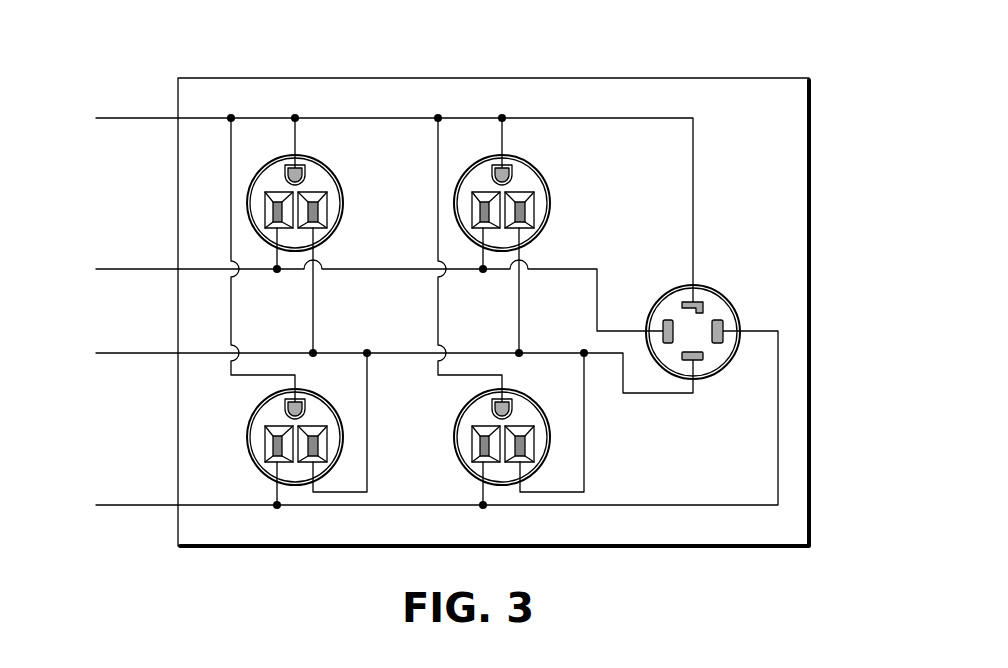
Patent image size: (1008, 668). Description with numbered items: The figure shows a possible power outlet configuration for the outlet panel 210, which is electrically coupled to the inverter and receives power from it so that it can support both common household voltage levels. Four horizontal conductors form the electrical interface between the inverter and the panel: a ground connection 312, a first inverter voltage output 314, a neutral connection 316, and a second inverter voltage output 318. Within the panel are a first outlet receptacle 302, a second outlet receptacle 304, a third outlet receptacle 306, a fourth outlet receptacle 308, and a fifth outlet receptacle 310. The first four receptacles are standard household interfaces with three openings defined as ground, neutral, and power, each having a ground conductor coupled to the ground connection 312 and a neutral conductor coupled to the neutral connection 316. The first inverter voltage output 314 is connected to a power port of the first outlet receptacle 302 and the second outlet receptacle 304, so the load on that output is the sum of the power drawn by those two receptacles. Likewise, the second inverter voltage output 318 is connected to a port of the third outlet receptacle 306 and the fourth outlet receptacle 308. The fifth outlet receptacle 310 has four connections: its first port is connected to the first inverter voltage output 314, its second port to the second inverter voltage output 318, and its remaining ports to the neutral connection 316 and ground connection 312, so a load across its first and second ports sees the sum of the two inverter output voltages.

The outlet panel 210 is at (728, 78).
The first outlet receptacle 302 is at (344, 203).
The second outlet receptacle 304 is at (551, 203).
The third outlet receptacle 306 is at (247, 437).
The fourth outlet receptacle 308 is at (454, 437).
The fifth outlet receptacle 310 is at (725, 297).
The ground connection 312 is at (160, 118).
The first inverter voltage output 314 is at (160, 269).
The neutral connection 316 is at (160, 353).
The second inverter voltage output 318 is at (160, 505).